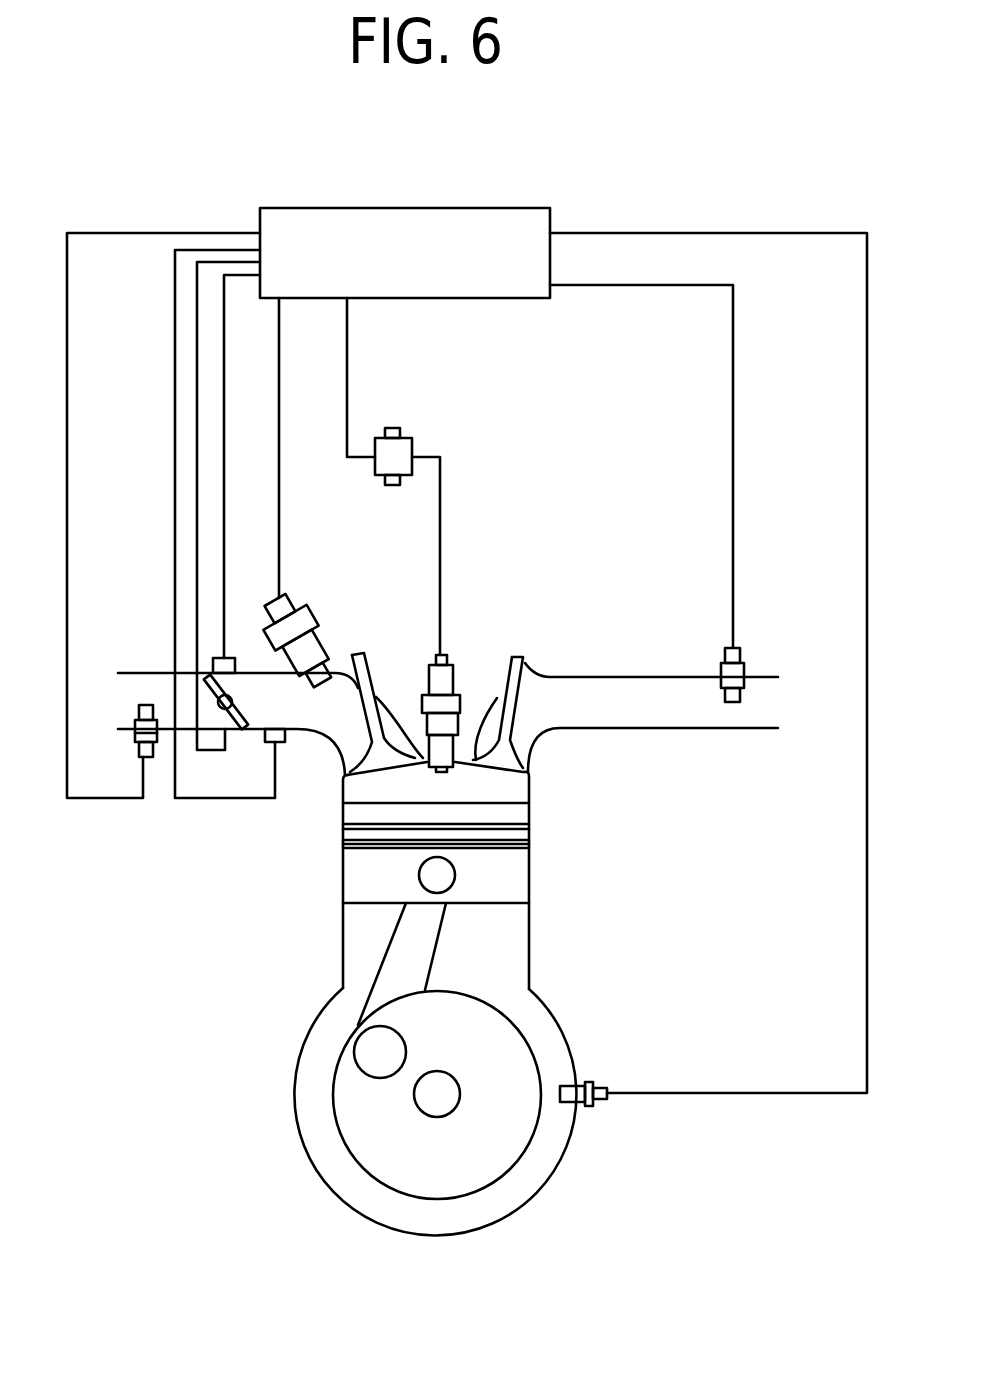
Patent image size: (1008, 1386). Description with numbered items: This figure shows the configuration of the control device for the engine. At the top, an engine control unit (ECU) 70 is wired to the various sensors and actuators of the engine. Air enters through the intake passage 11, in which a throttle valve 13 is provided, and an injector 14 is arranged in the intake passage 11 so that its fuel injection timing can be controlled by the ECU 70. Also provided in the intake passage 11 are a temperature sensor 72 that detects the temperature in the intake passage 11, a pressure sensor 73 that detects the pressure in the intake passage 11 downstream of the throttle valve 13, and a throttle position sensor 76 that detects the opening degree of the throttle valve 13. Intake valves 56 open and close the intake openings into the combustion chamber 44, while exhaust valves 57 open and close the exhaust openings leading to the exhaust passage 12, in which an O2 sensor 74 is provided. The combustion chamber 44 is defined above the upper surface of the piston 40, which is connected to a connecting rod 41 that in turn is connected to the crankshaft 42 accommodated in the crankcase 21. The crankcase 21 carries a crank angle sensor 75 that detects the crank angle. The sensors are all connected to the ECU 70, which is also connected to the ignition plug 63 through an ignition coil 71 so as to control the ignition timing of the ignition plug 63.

The engine control unit (ECU) 70 is at (438, 208).
The ignition coil 71 is at (412, 438).
The intake passage 11 is at (157, 672).
The throttle position sensor 76 is at (233, 658).
The throttle valve 13 is at (242, 730).
The injector 14 is at (312, 607).
The temperature sensor 72 is at (150, 760).
The pressure sensor 73 is at (278, 745).
The intake valve 56 is at (370, 678).
The ignition plug 63 is at (458, 673).
The exhaust valve 57 is at (527, 665).
The exhaust passage 12 is at (650, 676).
The O2 sensor 74 is at (742, 652).
The crankcase 21 is at (558, 1167).
The combustion chamber 44 is at (497, 783).
The piston 40 is at (500, 873).
The connecting rod 41 is at (383, 961).
The crankshaft 42 is at (455, 1108).
The crank angle sensor 75 is at (607, 1083).